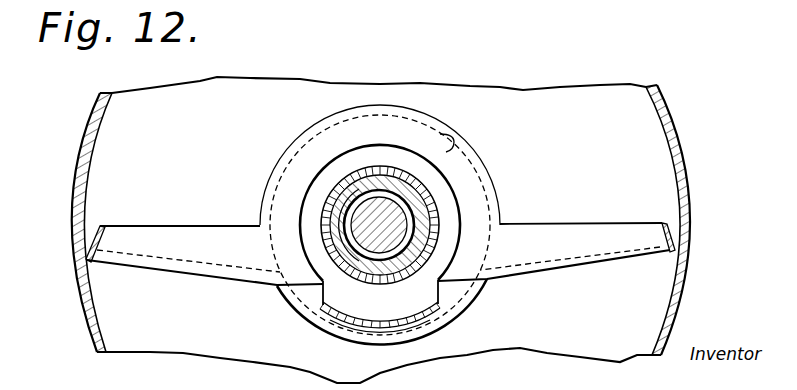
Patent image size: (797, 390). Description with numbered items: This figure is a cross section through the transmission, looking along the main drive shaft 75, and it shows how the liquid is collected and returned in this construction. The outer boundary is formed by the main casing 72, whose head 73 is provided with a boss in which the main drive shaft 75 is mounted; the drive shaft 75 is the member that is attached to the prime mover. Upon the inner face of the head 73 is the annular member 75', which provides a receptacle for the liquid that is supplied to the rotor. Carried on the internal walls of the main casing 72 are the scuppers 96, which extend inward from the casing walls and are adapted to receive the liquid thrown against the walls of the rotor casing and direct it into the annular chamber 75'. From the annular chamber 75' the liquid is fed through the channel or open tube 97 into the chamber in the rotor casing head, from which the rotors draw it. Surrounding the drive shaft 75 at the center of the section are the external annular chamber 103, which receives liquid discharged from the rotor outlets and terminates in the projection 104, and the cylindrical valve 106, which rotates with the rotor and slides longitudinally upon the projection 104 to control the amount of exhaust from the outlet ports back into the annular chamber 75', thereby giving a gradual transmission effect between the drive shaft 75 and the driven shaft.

The main casing 72 is at (677, 140).
The head 73 is at (120, 305).
The scuppers 96 is at (93, 237).
The channel or open tube 97 is at (350, 310).
The external annular chamber 103 is at (380, 229).
The projection 104 is at (333, 203).
The valve 106 is at (400, 187).
The main drive shaft 75 is at (416, 229).
The annular member 75' is at (397, 225).